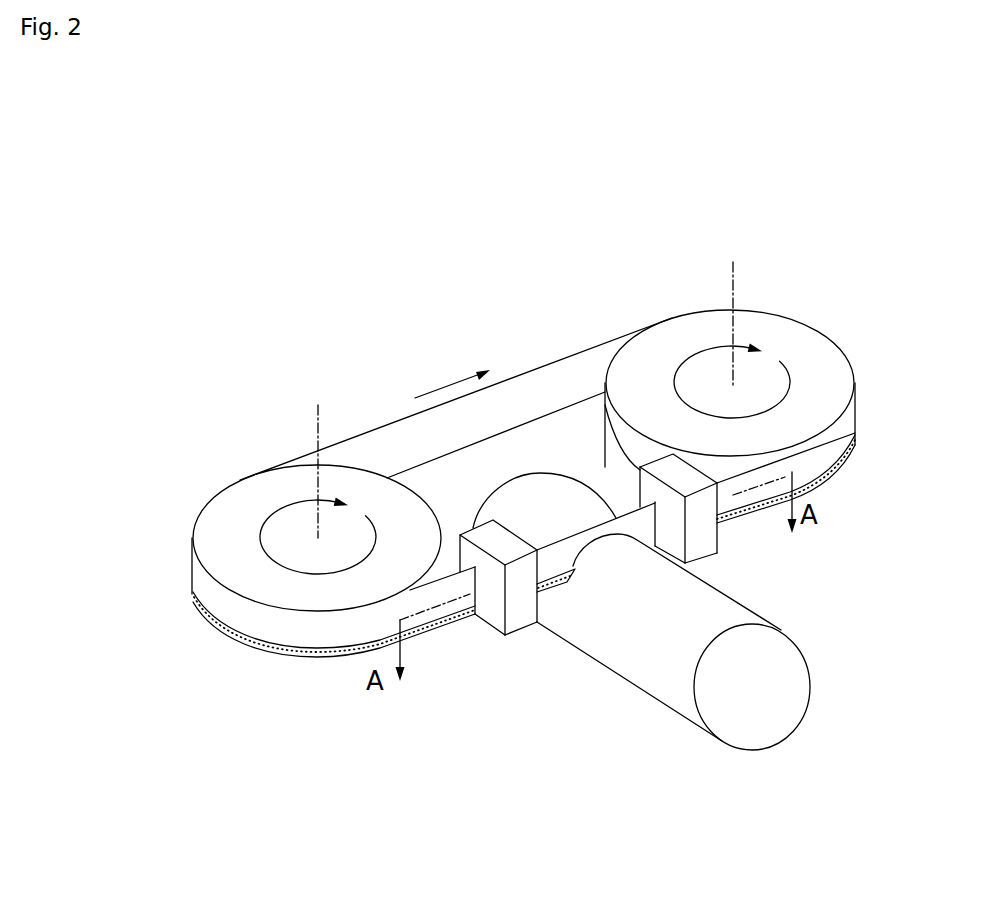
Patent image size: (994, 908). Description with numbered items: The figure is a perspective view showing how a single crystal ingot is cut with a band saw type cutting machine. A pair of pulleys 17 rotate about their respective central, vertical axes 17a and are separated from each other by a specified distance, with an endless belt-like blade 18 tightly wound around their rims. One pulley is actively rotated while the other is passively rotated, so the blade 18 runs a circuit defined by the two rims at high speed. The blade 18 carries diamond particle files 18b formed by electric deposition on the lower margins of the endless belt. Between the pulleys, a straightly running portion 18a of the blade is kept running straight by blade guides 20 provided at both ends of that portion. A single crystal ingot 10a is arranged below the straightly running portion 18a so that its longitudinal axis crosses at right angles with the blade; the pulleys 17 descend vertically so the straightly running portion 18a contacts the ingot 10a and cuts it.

The pulley 17 is at (260, 492).
The central vertical axis 17a is at (320, 428).
The endless belt-like blade 18 is at (825, 458).
The straightly running portion 18a is at (550, 567).
The diamond particle files 18b is at (308, 660).
The blade guide 20 is at (492, 608).
The single crystal ingot 10a is at (720, 610).